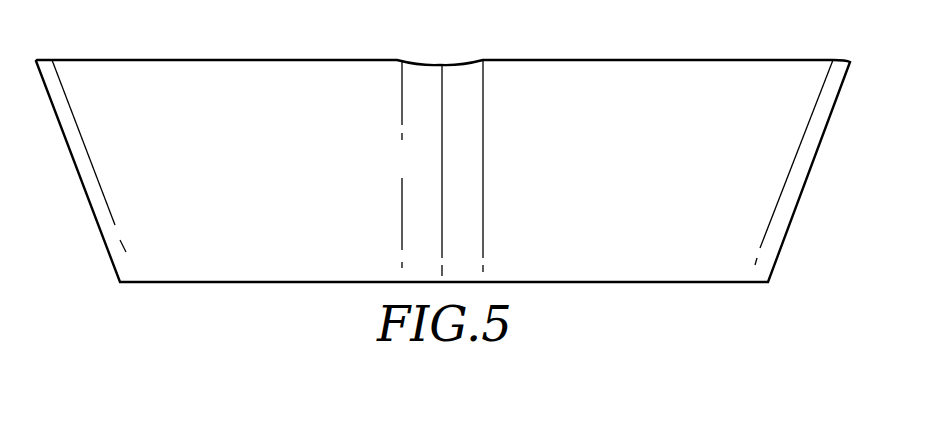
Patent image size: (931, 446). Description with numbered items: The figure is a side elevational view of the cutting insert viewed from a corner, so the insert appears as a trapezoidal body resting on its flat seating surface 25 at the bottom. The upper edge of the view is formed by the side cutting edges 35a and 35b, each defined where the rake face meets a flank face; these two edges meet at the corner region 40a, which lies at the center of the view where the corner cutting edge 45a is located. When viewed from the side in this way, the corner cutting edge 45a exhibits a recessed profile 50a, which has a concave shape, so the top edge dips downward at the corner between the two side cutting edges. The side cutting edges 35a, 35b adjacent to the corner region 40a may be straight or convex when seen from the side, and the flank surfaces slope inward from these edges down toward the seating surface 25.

The seating surface 25 is at (680, 283).
The side cutting edge 35a is at (700, 58).
The side cutting edge 35b is at (150, 58).
The corner region 40a is at (386, 155).
The corner cutting edge 45a is at (415, 60).
The recessed profile 50a is at (465, 60).